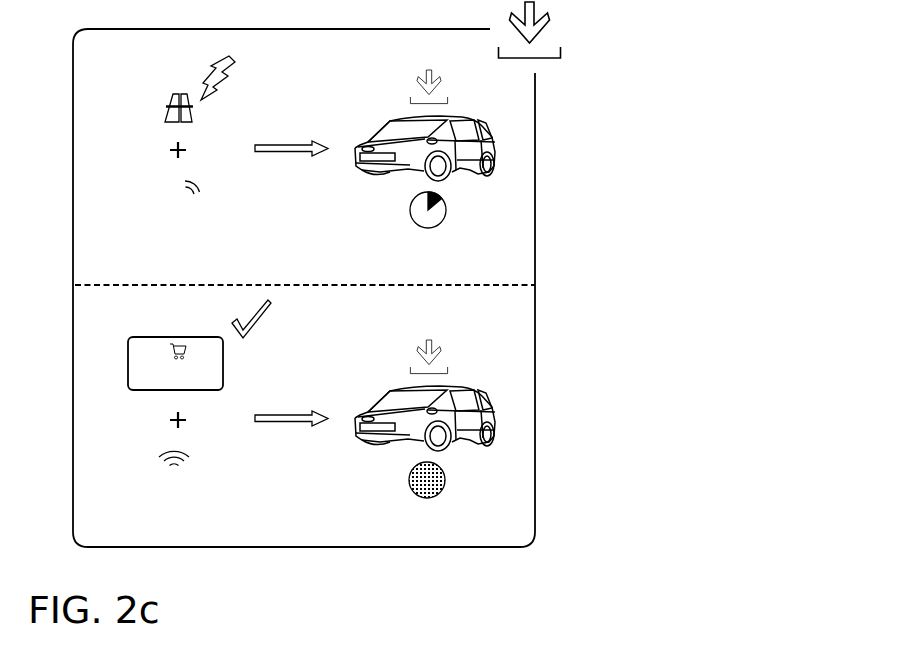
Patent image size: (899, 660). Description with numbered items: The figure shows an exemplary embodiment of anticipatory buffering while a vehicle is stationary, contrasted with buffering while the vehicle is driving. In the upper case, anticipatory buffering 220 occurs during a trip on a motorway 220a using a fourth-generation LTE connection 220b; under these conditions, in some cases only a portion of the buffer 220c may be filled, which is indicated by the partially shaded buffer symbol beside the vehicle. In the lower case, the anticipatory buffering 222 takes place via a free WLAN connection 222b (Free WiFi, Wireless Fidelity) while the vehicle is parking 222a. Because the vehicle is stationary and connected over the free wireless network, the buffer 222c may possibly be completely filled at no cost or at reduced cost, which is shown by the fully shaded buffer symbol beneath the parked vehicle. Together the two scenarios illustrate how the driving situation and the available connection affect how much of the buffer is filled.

The anticipatory buffering 220 is at (525, 149).
The motorway 220a is at (194, 113).
The 4G (LTE) connection 220b is at (196, 194).
The buffer 220c is at (448, 210).
The anticipatory buffering 222 is at (526, 418).
The parking 222a is at (222, 364).
The WLAN connection 222b is at (190, 461).
The buffer 222c is at (447, 481).